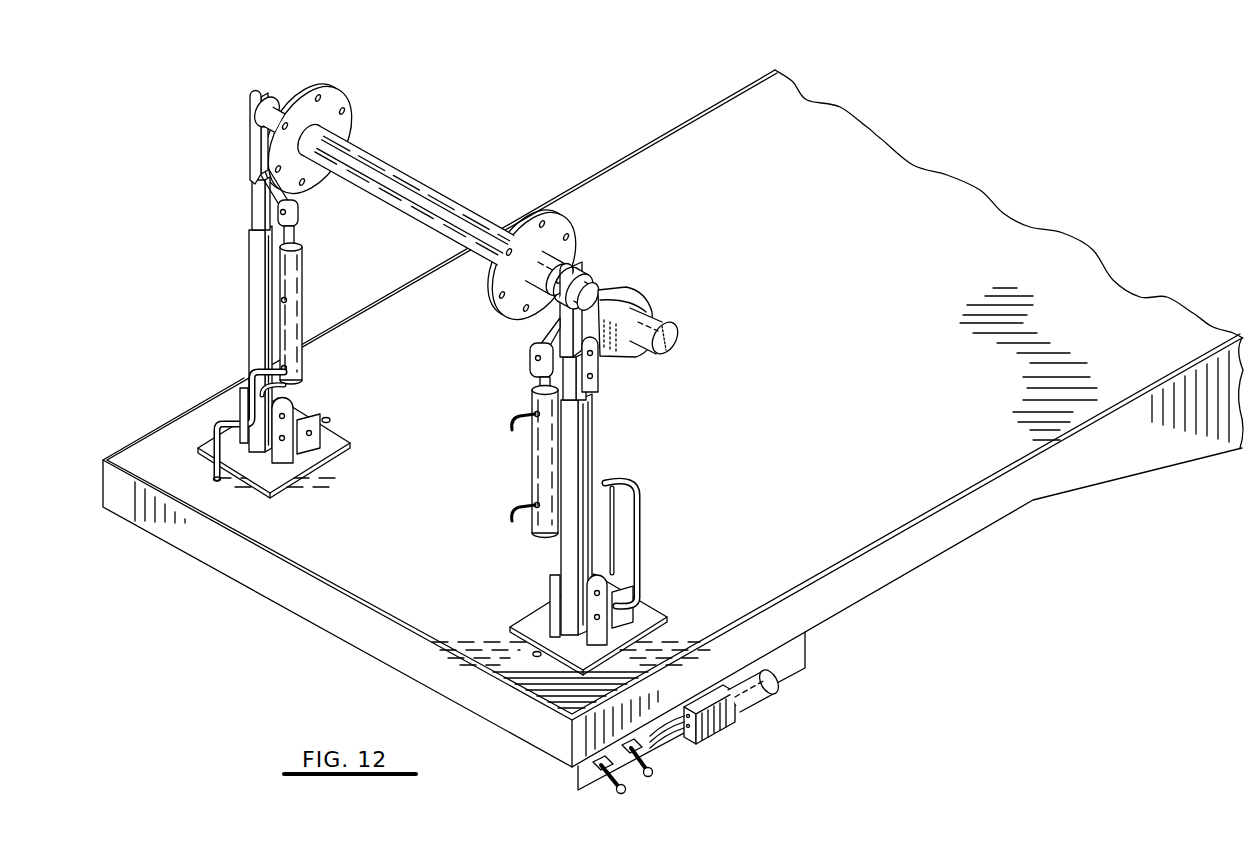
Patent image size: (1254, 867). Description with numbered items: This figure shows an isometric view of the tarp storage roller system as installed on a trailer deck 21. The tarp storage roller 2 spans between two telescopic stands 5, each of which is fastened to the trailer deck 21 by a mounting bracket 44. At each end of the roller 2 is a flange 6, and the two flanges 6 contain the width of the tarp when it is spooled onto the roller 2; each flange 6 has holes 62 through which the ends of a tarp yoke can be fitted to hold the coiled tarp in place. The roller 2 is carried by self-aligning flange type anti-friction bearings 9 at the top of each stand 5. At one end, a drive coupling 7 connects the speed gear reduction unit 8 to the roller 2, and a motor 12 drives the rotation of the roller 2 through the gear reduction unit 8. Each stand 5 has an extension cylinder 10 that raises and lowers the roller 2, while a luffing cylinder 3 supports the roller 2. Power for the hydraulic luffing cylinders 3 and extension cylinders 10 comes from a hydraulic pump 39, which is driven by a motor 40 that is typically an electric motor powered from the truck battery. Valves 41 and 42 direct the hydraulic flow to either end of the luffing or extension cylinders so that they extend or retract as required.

The tarp storage roller 2 is at (434, 181).
The luffing cylinder 3 is at (612, 480).
The telescopic stand 5 is at (248, 262).
The flange 6 is at (345, 95).
The drive coupling 7 is at (608, 285).
The speed gear reduction unit 8 is at (642, 300).
The flange type anti-friction bearing 9 is at (271, 96).
The extension cylinder 10 is at (302, 302).
The motor 12 is at (668, 322).
The trailer deck 21 is at (152, 452).
The hydraulic pump 39 is at (725, 722).
The motor 40 is at (760, 680).
The valve 41 is at (630, 790).
The valve 42 is at (658, 766).
The mounting bracket 44 is at (238, 402).
The hole 62 is at (357, 118).